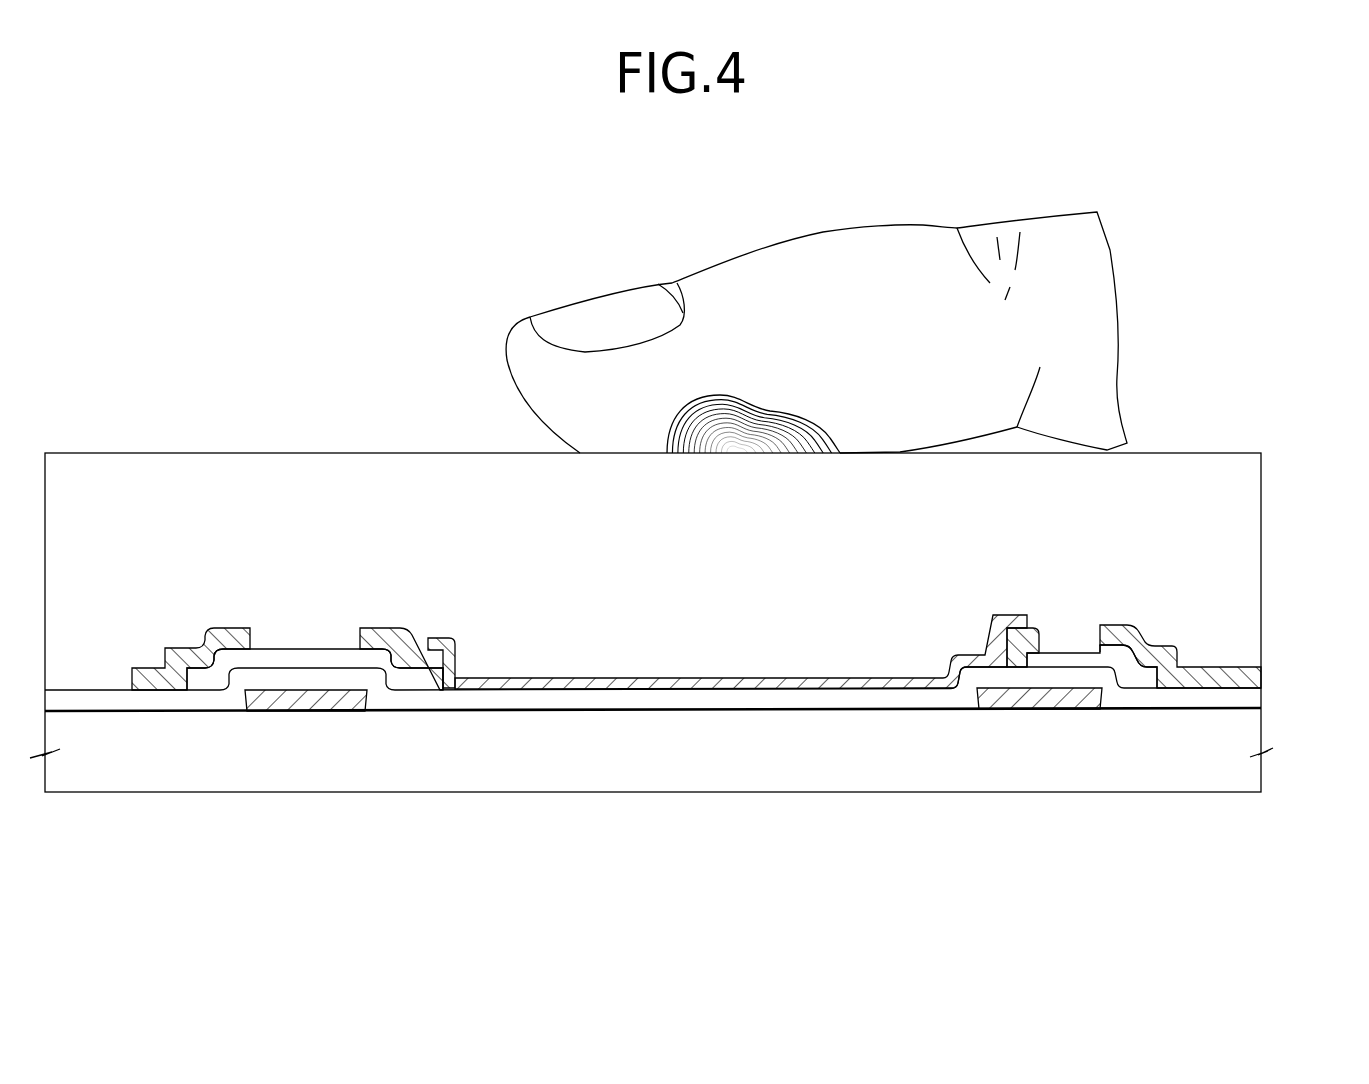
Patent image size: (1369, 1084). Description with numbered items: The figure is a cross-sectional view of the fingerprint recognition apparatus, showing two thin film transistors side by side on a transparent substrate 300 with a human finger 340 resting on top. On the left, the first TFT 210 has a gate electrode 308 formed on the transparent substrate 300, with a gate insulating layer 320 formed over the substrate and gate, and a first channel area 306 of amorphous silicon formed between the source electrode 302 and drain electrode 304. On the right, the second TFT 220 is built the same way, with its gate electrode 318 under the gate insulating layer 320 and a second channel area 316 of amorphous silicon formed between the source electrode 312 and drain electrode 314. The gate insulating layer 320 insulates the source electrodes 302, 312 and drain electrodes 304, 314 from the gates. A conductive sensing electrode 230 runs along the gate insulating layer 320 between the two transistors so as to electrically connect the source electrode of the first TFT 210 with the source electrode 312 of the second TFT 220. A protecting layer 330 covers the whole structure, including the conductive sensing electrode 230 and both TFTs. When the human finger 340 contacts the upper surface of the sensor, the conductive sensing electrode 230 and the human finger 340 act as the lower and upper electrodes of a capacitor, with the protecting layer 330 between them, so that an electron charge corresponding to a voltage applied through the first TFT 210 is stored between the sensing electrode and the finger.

The first TFT 210 is at (311, 785).
The second TFT 220 is at (1089, 777).
The conductive sensing electrode 230 is at (688, 689).
The transparent substrate 300 is at (1252, 773).
The source electrode 302 is at (431, 746).
The drain electrode 304 is at (153, 690).
The first channel area 306 is at (405, 672).
The gate electrode 308 is at (305, 711).
The source electrode 312 is at (1013, 657).
The drain electrode 314 is at (1180, 741).
The second channel area 316 is at (1142, 678).
The gate electrode 318 is at (1050, 709).
The gate insulating layer 320 is at (1252, 697).
The protecting layer 330 is at (1252, 545).
The human finger 340 is at (823, 248).